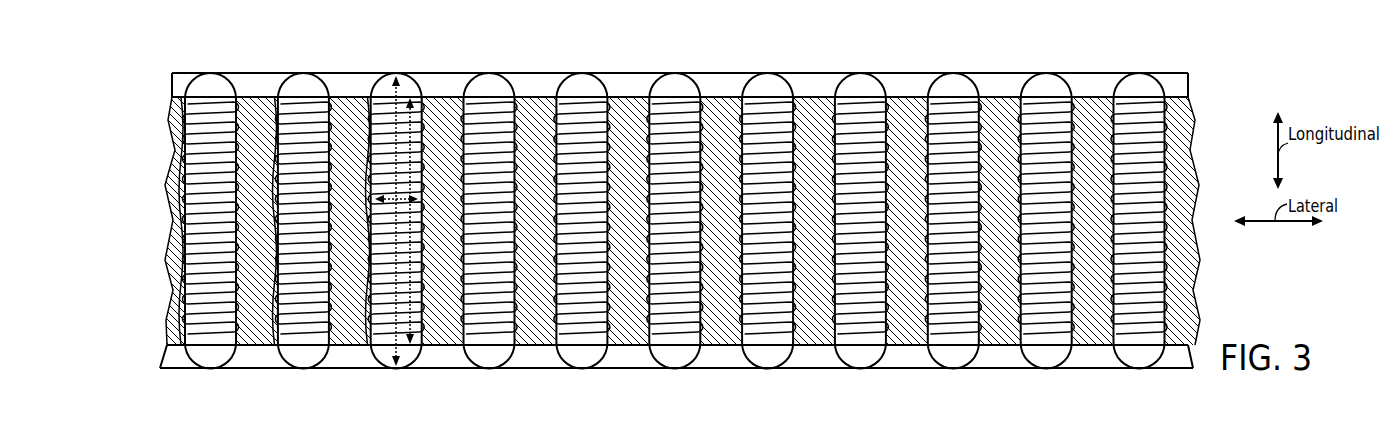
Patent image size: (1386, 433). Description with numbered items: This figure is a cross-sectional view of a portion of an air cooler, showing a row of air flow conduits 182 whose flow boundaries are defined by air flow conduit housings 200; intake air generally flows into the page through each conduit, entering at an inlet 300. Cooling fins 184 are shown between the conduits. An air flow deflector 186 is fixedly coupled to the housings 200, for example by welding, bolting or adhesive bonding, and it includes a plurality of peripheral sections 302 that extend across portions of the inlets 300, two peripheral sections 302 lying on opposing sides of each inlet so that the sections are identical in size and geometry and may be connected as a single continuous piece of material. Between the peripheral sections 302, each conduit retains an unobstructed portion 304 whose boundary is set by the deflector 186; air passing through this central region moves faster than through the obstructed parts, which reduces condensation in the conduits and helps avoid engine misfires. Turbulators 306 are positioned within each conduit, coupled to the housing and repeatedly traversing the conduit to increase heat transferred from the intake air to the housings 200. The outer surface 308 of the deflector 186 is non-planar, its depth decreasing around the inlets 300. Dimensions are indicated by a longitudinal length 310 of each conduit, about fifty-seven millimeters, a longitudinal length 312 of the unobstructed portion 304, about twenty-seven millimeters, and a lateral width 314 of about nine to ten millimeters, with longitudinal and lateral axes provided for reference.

The air flow conduit 182 is at (210, 377).
The cooling fins 184 is at (429, 225).
The air flow deflector 186 is at (176, 73).
The air flow conduit housing 200 is at (237, 140).
The inlet 300 is at (187, 67).
The peripheral section 302 is at (177, 85).
The unobstructed portion 304 is at (176, 219).
The turbulator 306 is at (234, 259).
The outer surface 308 is at (455, 46).
The longitudinal length 310 is at (390, 366).
The longitudinal length of the unobstructed portion 312 is at (412, 330).
The lateral width 314 is at (421, 187).